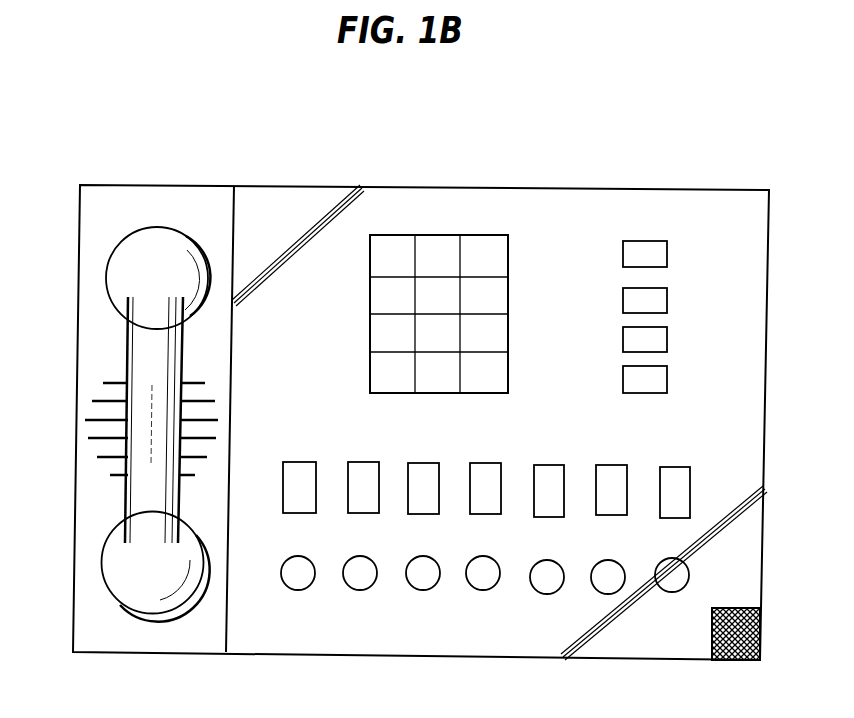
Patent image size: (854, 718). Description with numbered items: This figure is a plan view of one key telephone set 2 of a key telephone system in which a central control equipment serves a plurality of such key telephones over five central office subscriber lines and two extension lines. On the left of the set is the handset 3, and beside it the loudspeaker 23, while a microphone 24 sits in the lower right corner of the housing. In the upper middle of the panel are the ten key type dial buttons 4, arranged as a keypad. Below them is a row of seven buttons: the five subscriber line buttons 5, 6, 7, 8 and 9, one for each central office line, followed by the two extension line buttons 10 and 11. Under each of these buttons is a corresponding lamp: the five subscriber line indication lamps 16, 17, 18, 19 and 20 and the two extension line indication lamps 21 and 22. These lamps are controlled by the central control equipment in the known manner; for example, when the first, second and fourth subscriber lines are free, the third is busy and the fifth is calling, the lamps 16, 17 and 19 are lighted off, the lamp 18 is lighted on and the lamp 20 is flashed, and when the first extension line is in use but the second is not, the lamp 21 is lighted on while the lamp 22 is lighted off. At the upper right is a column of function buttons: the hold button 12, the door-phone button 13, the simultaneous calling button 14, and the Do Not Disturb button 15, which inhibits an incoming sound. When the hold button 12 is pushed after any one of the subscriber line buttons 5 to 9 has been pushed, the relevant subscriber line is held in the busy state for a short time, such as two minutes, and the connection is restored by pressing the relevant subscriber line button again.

The key telephone set 2 is at (318, 187).
The handset 3 is at (138, 352).
The ten key type dial buttons 4 is at (418, 235).
The subscriber line button 5 is at (298, 462).
The subscriber line button 6 is at (362, 462).
The subscriber line button 7 is at (424, 463).
The subscriber line button 8 is at (486, 463).
The subscriber line button 9 is at (550, 465).
The extension line button 10 is at (612, 465).
The extension line button 11 is at (676, 467).
The hold button 12 is at (623, 256).
The door-phone button 13 is at (623, 300).
The simultaneous calling button 14 is at (623, 340).
The Do Not Disturb button 15 is at (623, 379).
The subscriber line indication lamp 16 is at (298, 590).
The subscriber line indication lamp 17 is at (360, 590).
The subscriber line indication lamp 18 is at (423, 590).
The subscriber line indication lamp 19 is at (483, 590).
The subscriber line indication lamp 20 is at (547, 594).
The extension line indication lamp 21 is at (608, 594).
The extension line indication lamp 22 is at (672, 592).
The loudspeaker 23 is at (85, 420).
The microphone 24 is at (752, 640).